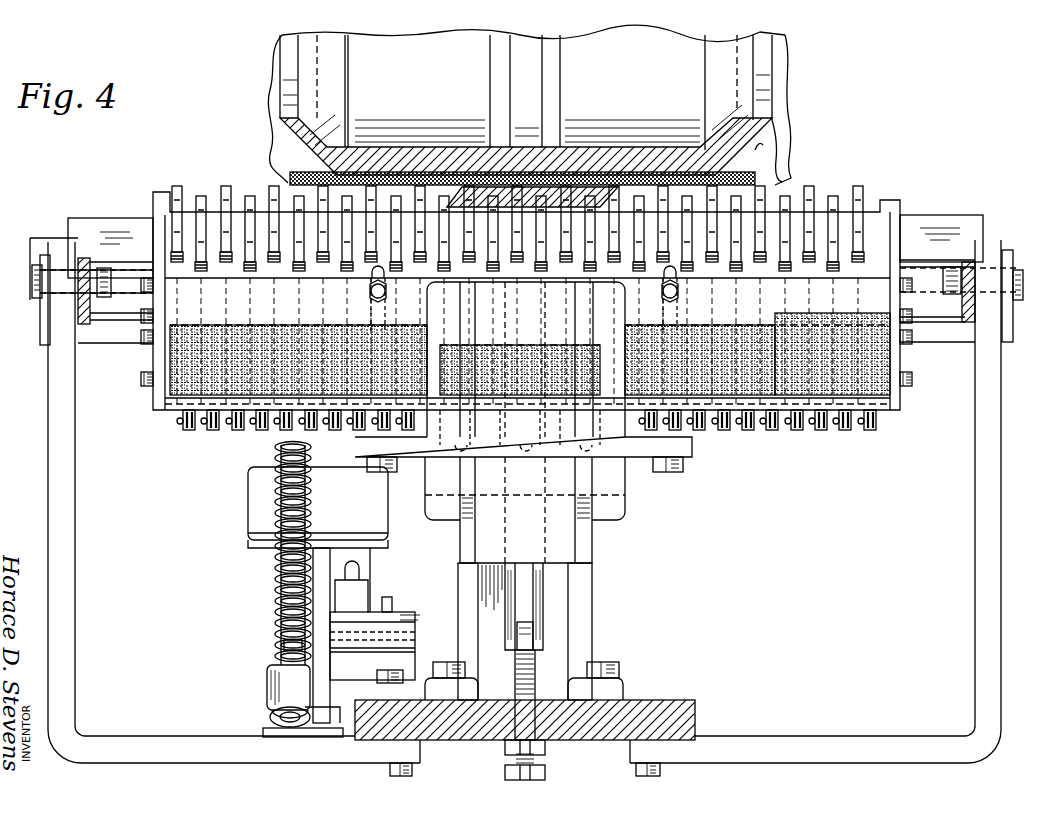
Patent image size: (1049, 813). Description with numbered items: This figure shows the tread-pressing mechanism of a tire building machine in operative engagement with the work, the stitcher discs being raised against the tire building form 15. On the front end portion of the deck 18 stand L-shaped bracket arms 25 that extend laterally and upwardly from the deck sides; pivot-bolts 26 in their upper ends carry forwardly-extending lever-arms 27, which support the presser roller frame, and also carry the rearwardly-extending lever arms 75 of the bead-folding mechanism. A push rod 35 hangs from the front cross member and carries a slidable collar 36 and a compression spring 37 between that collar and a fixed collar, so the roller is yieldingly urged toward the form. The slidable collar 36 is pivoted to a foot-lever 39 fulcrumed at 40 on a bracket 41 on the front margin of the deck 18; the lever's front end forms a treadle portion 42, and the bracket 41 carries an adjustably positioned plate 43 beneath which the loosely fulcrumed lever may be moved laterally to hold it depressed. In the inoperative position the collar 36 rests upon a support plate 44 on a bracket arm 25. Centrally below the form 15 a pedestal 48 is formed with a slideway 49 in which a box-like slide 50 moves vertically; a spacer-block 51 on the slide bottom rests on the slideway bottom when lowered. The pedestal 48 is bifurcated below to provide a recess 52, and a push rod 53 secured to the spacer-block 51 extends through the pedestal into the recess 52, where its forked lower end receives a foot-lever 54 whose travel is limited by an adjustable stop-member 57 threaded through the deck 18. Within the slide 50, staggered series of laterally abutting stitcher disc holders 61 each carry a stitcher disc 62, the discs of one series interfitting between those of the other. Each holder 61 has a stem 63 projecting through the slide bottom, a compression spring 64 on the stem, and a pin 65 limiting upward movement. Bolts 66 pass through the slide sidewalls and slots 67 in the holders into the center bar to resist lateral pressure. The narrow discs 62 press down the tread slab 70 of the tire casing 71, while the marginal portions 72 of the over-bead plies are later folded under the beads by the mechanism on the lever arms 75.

The tire building form 15 is at (284, 97).
The deck 18 is at (668, 700).
The L-shaped bracket arm 25 is at (49, 440).
The pivot-bolt 26 is at (1018, 270).
The lever-arm 27 is at (45, 337).
The push rod 35 is at (282, 573).
The slidable collar 36 is at (267, 688).
The compression spring 37 is at (278, 600).
The foot-lever 39 is at (343, 726).
The fulcrum 40 is at (284, 645).
The bracket 41 is at (402, 612).
The treadle portion 42 is at (248, 509).
The adjustably positioned plate 43 is at (372, 568).
The support plate 44 is at (275, 737).
The pedestal 48 is at (583, 544).
The slideway 49 is at (595, 497).
The slide 50 is at (894, 395).
The spacer-block 51 is at (694, 452).
The recess 52 is at (564, 592).
The push rod 53 is at (545, 614).
The foot-lever 54 is at (525, 640).
The adjustable stop-member 57 is at (538, 675).
The stitcher disc holder 61 is at (178, 270).
The stitcher disc 62 is at (796, 190).
The stem 63 is at (838, 428).
The compression spring 64 is at (168, 350).
The pin 65 is at (880, 430).
The bolt 66 is at (370, 299).
The slot 67 is at (372, 274).
The tread slab 70 is at (578, 178).
The tire casing 71 is at (687, 180).
The marginal portion of over-bead plies 72 is at (790, 164).
The lever arm 75 is at (88, 335).